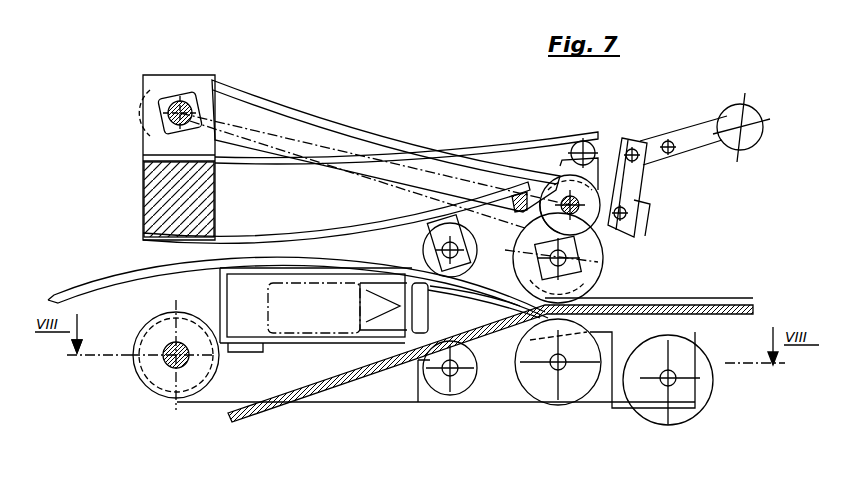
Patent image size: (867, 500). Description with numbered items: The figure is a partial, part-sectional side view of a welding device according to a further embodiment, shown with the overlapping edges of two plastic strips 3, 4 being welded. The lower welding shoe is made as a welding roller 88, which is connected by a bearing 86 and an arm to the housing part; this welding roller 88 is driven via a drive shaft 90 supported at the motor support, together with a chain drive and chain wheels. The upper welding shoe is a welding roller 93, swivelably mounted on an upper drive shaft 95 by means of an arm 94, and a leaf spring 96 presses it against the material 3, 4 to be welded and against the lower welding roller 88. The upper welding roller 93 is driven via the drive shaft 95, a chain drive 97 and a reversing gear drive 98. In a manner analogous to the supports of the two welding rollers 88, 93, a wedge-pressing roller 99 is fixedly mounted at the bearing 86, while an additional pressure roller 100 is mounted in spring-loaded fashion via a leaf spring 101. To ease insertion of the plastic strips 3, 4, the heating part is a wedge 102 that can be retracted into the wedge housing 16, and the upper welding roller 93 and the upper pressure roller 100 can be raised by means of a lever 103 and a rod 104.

The plastic strip 3 is at (113, 278).
The plastic strip 4 is at (272, 410).
The wedge housing 16 is at (238, 347).
The bearing 86 is at (510, 388).
The welding roller 88 is at (575, 382).
The drive shaft 90 is at (170, 367).
The welding roller 93 is at (590, 262).
The arm 94 is at (258, 128).
The upper drive shaft 95 is at (166, 113).
The leaf spring 96 is at (510, 140).
The chain drive 97 is at (412, 130).
The reversing gear drive 98 is at (592, 222).
The wedge-pressing roller 99 is at (447, 385).
The pressure roller 100 is at (447, 277).
The leaf spring 101 is at (347, 235).
The wedge 102 is at (491, 310).
The lever 103 is at (743, 113).
The rod 104 is at (657, 118).